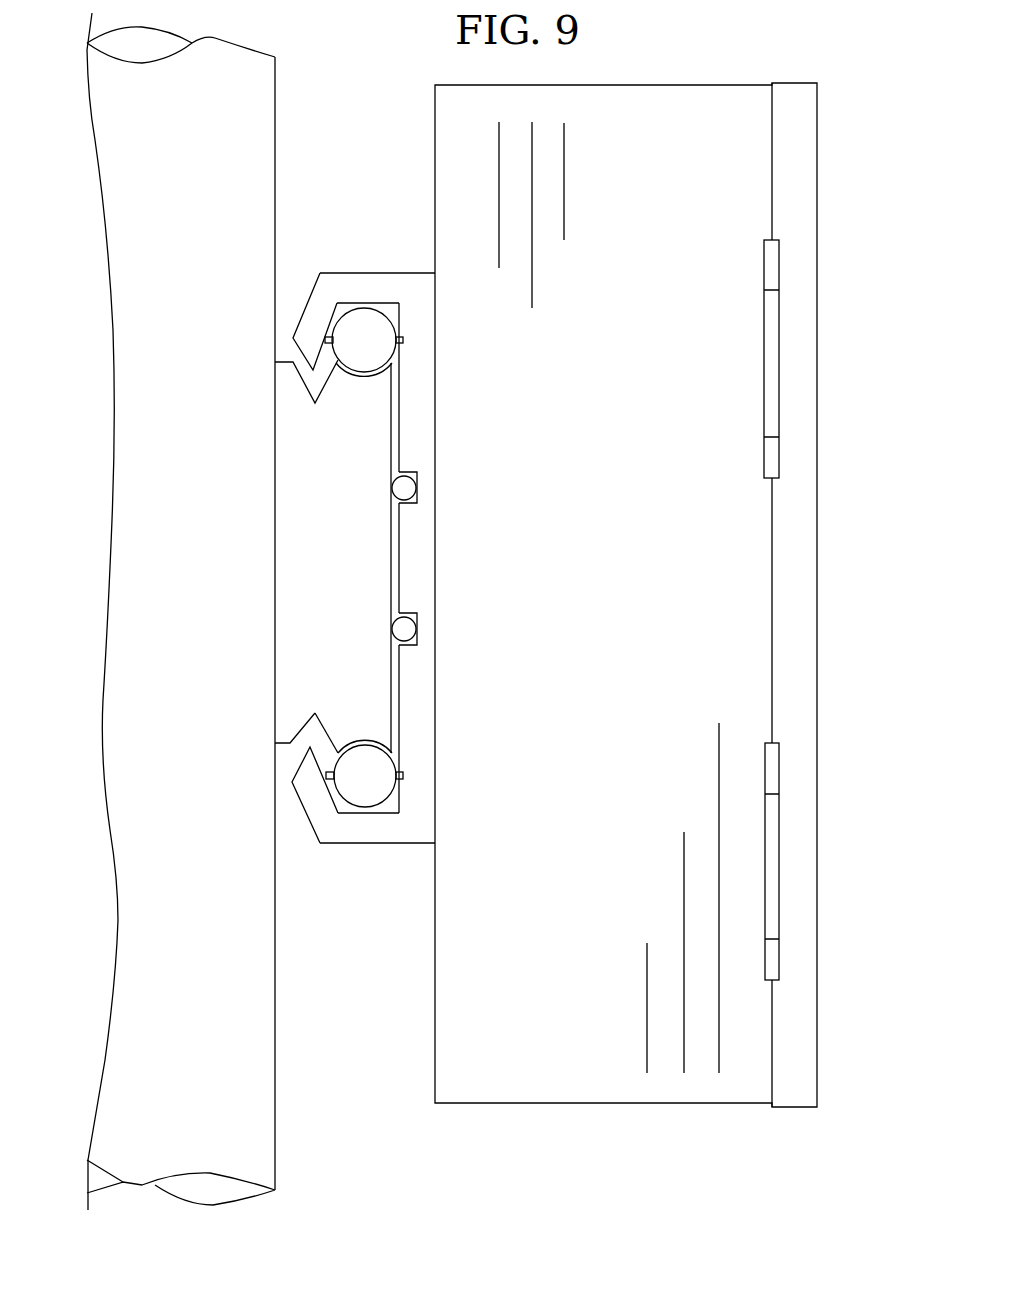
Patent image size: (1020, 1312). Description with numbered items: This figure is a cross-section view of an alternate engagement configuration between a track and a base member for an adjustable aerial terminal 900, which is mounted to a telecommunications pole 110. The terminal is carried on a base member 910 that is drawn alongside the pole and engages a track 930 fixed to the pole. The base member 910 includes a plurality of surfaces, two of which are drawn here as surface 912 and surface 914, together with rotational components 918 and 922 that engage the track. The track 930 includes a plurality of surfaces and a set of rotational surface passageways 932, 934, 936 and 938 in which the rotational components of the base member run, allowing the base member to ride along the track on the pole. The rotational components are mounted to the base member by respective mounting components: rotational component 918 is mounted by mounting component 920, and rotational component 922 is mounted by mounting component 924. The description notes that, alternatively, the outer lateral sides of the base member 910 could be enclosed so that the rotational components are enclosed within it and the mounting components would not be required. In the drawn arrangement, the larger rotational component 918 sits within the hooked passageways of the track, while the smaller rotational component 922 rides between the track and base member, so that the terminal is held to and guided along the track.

The telecommunications pole 110 is at (268, 1196).
The adjustable aerial terminal 900 is at (815, 180).
The base member 910 is at (355, 873).
The surface of base member 912 is at (313, 328).
The surface of base member 914 is at (362, 287).
The rotational component 918 is at (370, 345).
The mounting component 920 is at (403, 343).
The rotational component 922 is at (408, 487).
The mounting component 924 is at (402, 505).
The track 930 is at (287, 742).
The rotational surface passageway 932 is at (305, 723).
The rotational surface passageway 934 is at (327, 712).
The rotational surface passageway 936 is at (377, 735).
The rotational surface passageway 938 is at (391, 567).